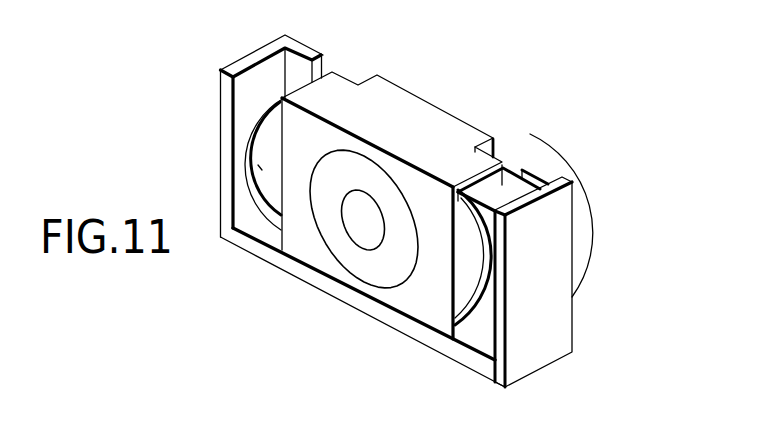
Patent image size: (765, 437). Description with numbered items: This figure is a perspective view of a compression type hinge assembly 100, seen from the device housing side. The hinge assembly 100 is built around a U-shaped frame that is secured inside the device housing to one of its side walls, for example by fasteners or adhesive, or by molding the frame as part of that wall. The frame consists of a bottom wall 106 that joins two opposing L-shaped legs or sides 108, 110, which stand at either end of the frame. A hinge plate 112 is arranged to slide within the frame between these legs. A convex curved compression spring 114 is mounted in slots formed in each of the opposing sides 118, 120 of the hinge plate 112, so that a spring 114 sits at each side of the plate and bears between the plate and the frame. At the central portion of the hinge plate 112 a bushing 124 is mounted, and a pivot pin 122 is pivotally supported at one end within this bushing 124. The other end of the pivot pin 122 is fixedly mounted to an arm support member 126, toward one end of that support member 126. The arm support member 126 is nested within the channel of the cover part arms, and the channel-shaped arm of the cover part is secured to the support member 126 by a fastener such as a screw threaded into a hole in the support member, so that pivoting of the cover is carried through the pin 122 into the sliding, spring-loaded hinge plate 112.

The compression type hinge assembly 100 is at (401, 60).
The bottom wall 106 is at (415, 333).
The L-shaped leg 108 is at (566, 338).
The L-shaped leg 110 is at (267, 71).
The hinge plate 112 is at (438, 115).
The convex curved compression spring 114 is at (258, 167).
The side of the hinge plate 118 is at (463, 272).
The side of the hinge plate 120 is at (280, 188).
The pivot pin 122 is at (352, 225).
The bushing 124 is at (380, 281).
The arm support member 126 is at (540, 133).